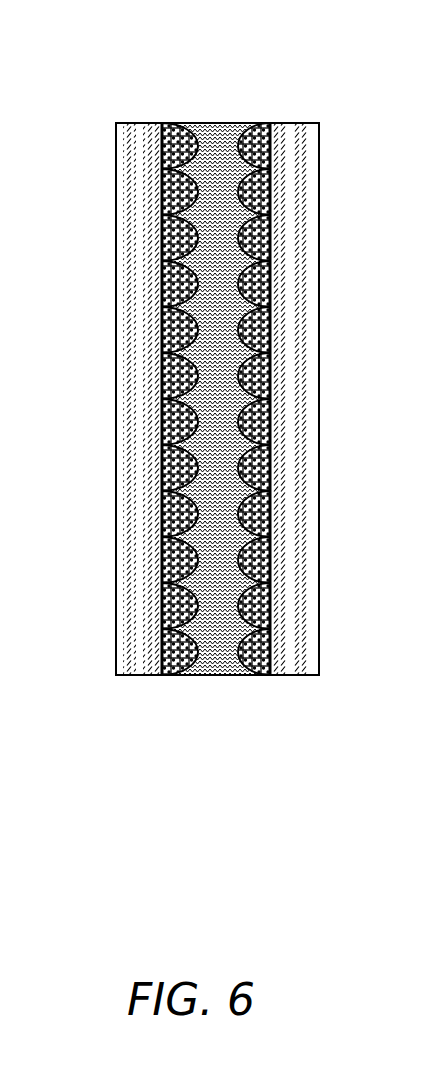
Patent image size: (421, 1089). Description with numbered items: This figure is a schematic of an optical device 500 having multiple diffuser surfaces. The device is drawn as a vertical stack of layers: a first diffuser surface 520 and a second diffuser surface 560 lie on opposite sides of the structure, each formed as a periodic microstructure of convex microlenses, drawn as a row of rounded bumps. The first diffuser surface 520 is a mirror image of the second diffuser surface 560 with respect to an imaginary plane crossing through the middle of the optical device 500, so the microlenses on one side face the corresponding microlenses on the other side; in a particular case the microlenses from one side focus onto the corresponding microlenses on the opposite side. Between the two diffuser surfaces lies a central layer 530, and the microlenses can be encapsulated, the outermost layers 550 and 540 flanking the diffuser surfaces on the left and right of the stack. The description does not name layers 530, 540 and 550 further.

The optical device 500 is at (165, 54).
The first diffuser surface 520 is at (252, 645).
The core layer 530 is at (230, 627).
The second outer layer 540 is at (319, 577).
The first outer layer 550 is at (135, 578).
The second diffuser surface 560 is at (168, 648).